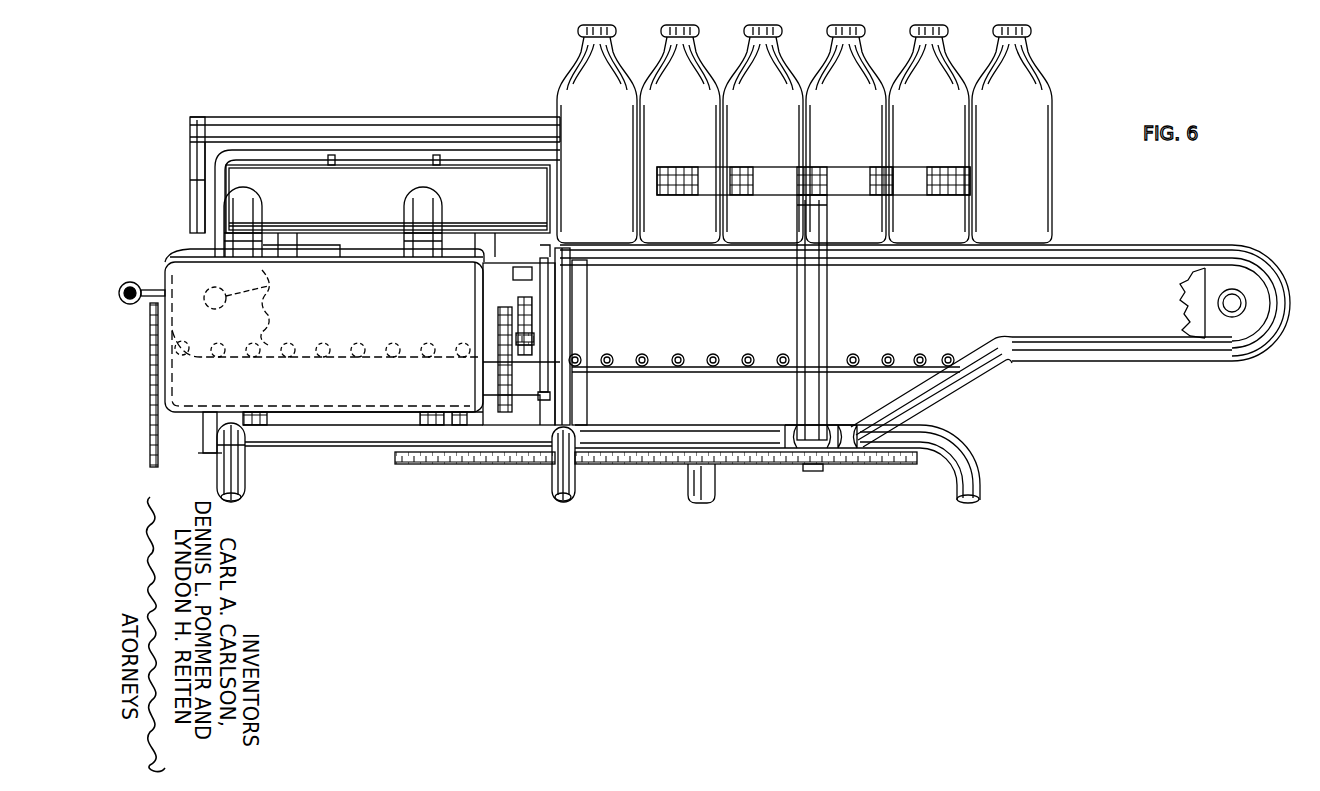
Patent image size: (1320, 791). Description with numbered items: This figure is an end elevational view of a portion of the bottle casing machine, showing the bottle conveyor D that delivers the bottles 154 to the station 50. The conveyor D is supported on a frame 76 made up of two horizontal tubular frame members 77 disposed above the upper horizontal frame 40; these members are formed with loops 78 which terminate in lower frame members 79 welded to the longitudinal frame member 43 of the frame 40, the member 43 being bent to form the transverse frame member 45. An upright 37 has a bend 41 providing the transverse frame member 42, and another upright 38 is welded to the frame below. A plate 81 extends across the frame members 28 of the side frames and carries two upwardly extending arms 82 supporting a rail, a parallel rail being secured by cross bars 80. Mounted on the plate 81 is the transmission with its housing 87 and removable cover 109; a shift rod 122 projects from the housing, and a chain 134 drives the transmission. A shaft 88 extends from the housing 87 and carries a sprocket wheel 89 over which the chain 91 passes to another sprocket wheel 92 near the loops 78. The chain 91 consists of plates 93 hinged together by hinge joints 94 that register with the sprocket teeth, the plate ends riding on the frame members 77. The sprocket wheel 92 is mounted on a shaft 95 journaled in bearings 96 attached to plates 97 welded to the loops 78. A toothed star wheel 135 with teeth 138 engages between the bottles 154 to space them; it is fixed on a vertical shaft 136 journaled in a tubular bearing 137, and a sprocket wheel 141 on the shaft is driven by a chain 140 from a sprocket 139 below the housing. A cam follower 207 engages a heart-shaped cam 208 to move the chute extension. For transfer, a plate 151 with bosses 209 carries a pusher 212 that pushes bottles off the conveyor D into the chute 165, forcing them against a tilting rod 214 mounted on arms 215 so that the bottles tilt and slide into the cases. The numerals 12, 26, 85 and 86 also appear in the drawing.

The conveyor frame 12 is at (548, 496).
The roller 26 is at (236, 474).
The frame member 28 is at (246, 456).
The upright 37 is at (969, 503).
The upright 38 is at (712, 482).
The upper horizontal frame 40 is at (670, 427).
The bend 41 is at (958, 452).
The transverse frame member 42 is at (900, 436).
The longitudinal frame member 43 is at (864, 466).
The transverse frame member 45 is at (713, 440).
The station 50 is at (384, 108).
The frame 76 is at (1131, 258).
The horizontal tubular frame members 77 is at (973, 258).
The loops 78 is at (1256, 268).
The lower frame members 79 is at (1079, 345).
The cross bars 80 is at (518, 274).
The plate 81 is at (337, 432).
The arms 82 is at (566, 297).
The vertical post 85 is at (580, 401).
The tank 86 is at (213, 420).
The housing 87 is at (382, 386).
The shaft 88 is at (280, 286).
The sprocket wheel 89 is at (270, 326).
The chain 91 is at (875, 366).
The sprocket wheel 92 is at (1187, 299).
The plates 93 is at (692, 364).
The hinge joints 94 is at (747, 364).
The shaft 95 is at (1230, 298).
The bearings 96 is at (1230, 318).
The plates 97 is at (1208, 326).
The removable cover 109 is at (354, 264).
The shift rod 122 is at (151, 290).
The chain 134 is at (160, 420).
The toothed star wheel 135 is at (768, 185).
The vertical shaft 136 is at (815, 472).
The tubular bearing 137 is at (816, 311).
The teeth 138 is at (880, 180).
The sprocket 139 is at (420, 466).
The chain 140 is at (633, 466).
The sprocket wheel 141 is at (904, 467).
The plate 151 is at (326, 221).
The bottles 154 is at (946, 148).
The chute 165 is at (447, 153).
The cam follower 207 is at (540, 340).
The heart-shaped cam 208 is at (530, 314).
The bosses 209 is at (245, 208).
The pusher 212 is at (396, 182).
The tilting rod 214 is at (262, 128).
The arms 215 is at (196, 148).
The bottle conveyor D is at (942, 366).